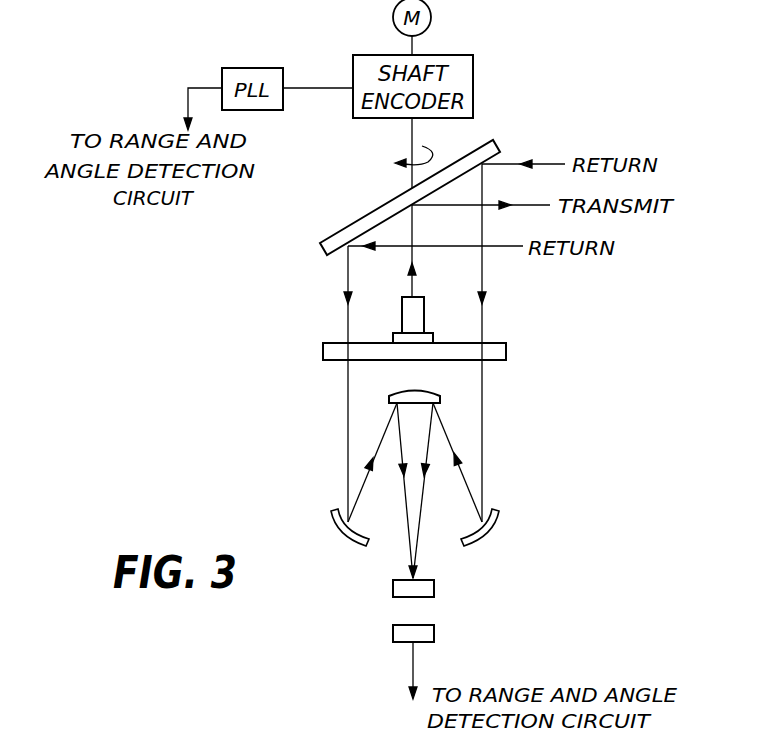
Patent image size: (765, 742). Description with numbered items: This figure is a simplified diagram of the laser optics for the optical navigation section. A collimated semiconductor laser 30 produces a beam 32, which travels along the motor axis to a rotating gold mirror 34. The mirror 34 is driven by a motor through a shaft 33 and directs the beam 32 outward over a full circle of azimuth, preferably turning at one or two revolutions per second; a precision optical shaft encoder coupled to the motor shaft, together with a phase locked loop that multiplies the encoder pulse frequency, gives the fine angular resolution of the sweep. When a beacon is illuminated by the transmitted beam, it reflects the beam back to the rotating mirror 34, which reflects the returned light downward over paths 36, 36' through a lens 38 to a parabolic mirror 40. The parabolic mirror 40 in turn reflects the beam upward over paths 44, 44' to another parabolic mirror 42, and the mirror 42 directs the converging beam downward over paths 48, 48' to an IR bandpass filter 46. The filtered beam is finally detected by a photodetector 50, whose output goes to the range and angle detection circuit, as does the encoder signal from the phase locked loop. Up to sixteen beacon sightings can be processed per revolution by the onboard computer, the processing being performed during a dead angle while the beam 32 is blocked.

The collimated semiconductor laser 30 is at (424, 310).
The beam 32 is at (415, 233).
The rotating shaft 33 is at (412, 135).
The rotating mirror 34 is at (493, 140).
The path 36 is at (305, 384).
The path 36' is at (526, 343).
The lens 38 is at (325, 355).
The parabolic mirror 40 is at (348, 533).
The parabolic mirror 42 is at (440, 398).
The path 44 is at (349, 462).
The path 44' is at (486, 462).
The IR bandpass filter 46 is at (427, 588).
The path 48 is at (388, 490).
The path 48' is at (441, 490).
The photodetector 50 is at (427, 632).